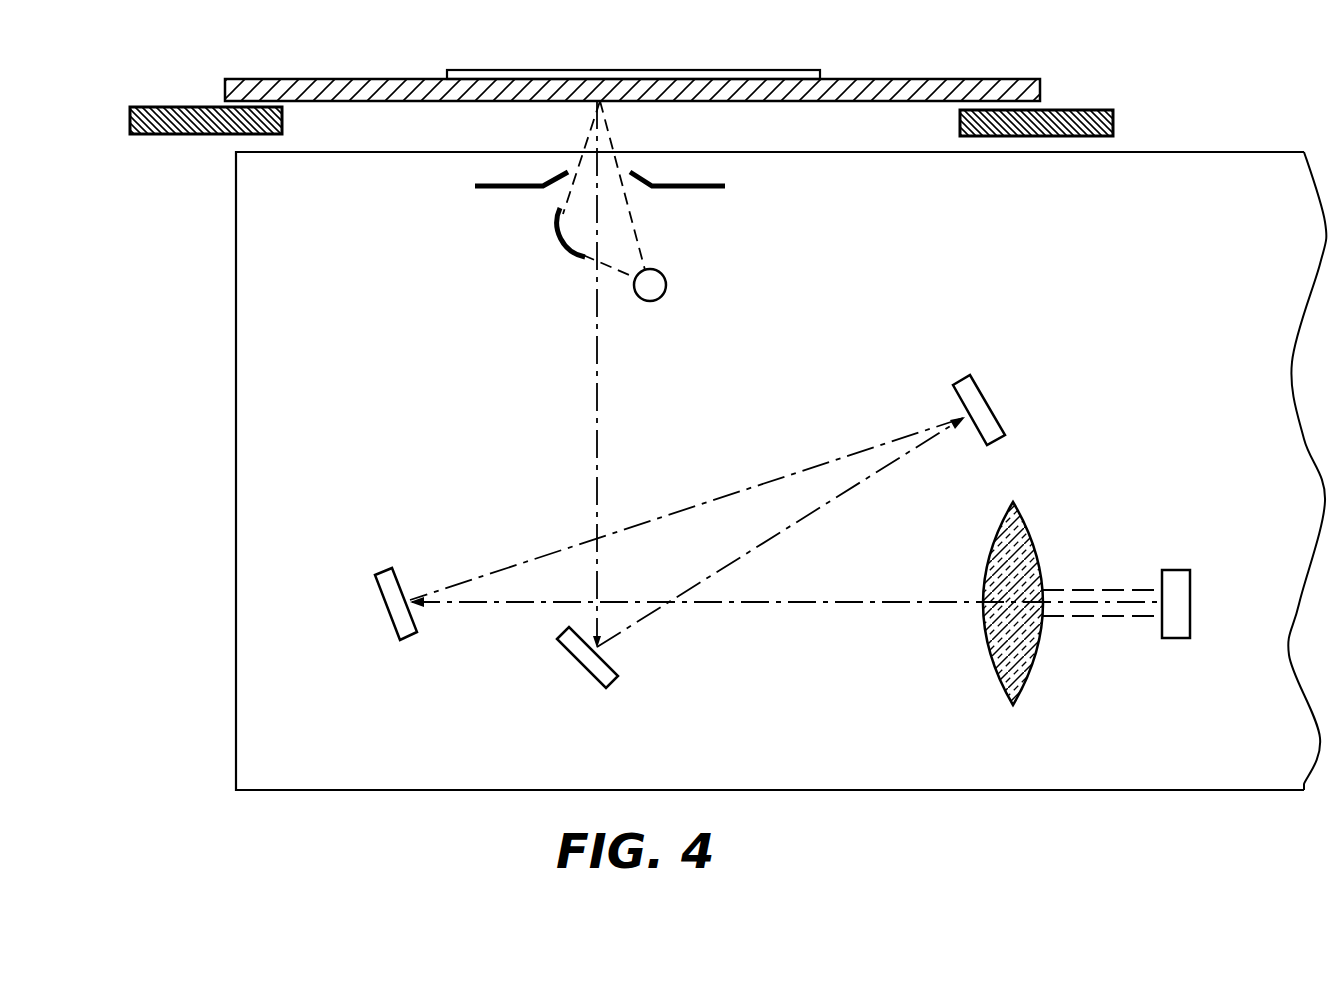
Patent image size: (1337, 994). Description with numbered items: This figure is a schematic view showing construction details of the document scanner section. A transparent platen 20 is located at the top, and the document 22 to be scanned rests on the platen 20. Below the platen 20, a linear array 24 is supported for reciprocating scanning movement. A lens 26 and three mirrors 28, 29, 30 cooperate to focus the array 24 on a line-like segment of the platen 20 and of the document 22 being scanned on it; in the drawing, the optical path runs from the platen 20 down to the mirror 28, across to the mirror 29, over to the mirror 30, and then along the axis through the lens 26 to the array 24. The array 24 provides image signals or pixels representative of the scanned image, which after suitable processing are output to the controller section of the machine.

The transparent platen 20 is at (357, 101).
The document 22 is at (698, 75).
The linear array 24 is at (1180, 571).
The lens 26 is at (1033, 678).
The mirror 28 is at (592, 674).
The mirror 29 is at (986, 406).
The mirror 30 is at (388, 618).